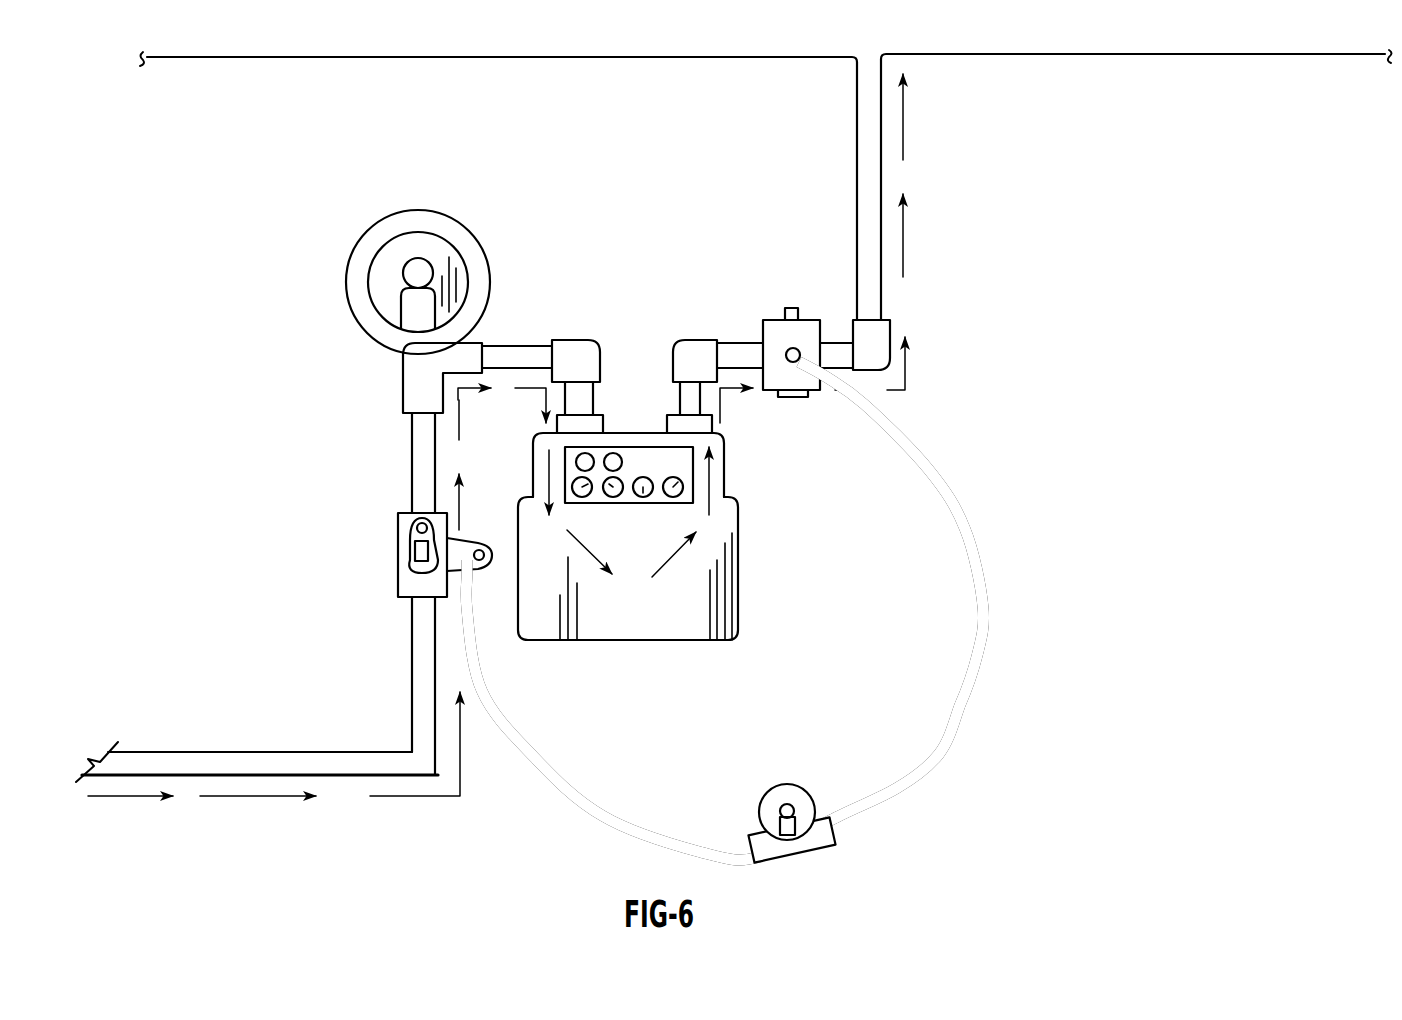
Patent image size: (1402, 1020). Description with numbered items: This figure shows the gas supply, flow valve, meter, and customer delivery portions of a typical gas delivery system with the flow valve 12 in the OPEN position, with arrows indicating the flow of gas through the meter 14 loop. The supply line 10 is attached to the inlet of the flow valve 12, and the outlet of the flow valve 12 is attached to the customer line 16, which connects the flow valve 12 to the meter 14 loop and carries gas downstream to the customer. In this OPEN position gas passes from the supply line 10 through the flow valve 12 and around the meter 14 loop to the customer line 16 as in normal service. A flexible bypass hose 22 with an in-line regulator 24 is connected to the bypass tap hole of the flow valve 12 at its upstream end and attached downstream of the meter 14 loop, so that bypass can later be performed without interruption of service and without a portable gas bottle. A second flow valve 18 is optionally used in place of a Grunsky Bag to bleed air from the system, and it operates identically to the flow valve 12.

The supply line 10 is at (286, 760).
The flow valve 12 is at (398, 543).
The meter 14 is at (663, 620).
The customer line 16 is at (868, 177).
The second flow valve 18 is at (768, 303).
The bypass hose 22 is at (975, 522).
The in-line regulator 24 is at (838, 843).